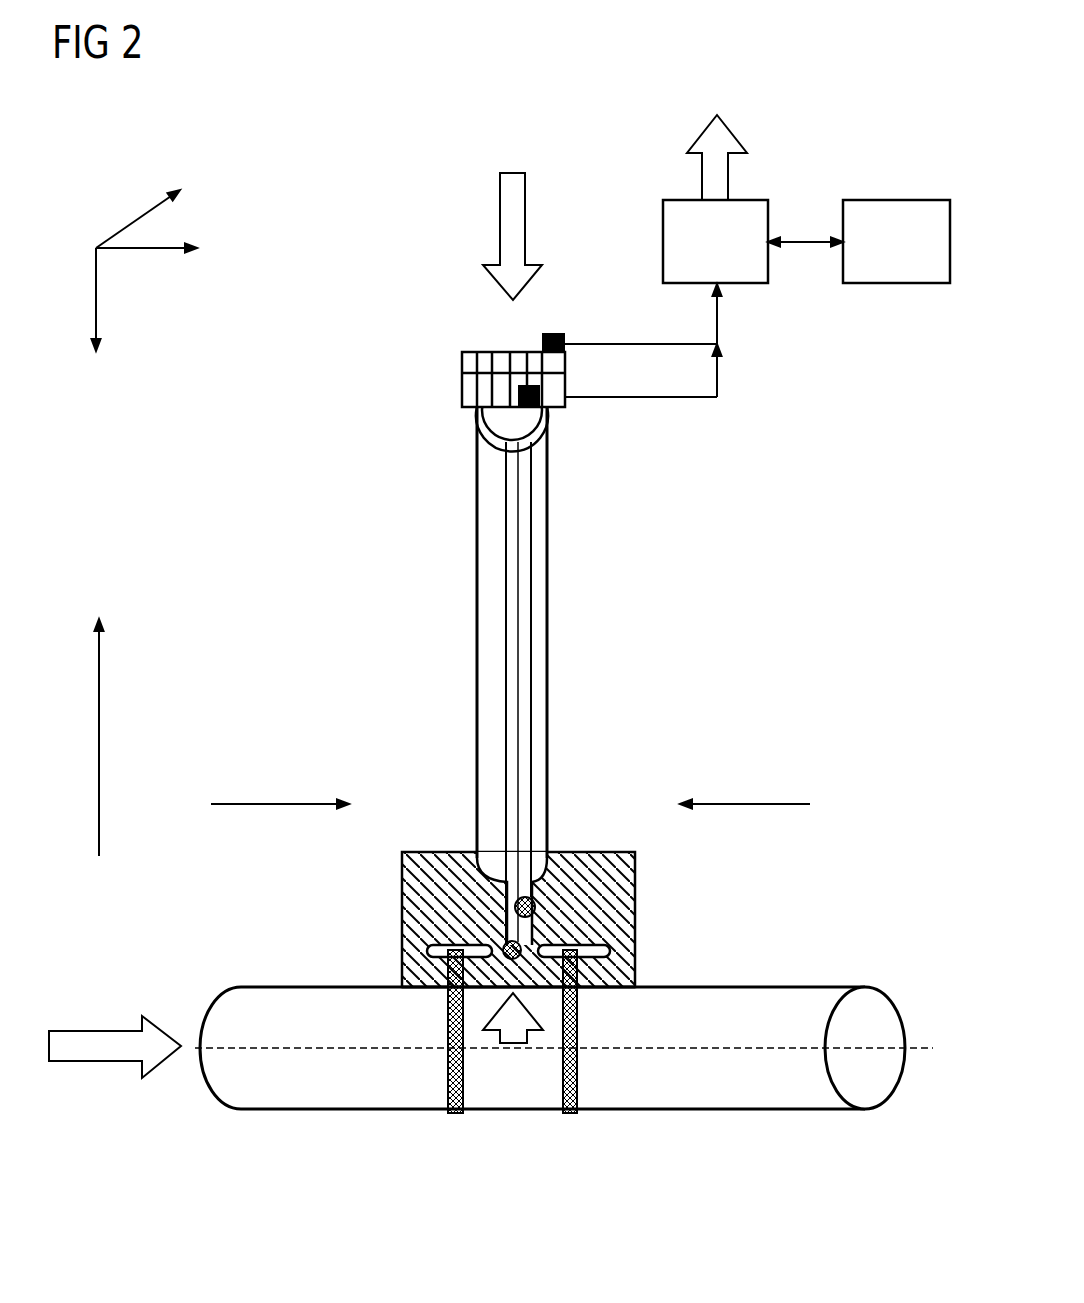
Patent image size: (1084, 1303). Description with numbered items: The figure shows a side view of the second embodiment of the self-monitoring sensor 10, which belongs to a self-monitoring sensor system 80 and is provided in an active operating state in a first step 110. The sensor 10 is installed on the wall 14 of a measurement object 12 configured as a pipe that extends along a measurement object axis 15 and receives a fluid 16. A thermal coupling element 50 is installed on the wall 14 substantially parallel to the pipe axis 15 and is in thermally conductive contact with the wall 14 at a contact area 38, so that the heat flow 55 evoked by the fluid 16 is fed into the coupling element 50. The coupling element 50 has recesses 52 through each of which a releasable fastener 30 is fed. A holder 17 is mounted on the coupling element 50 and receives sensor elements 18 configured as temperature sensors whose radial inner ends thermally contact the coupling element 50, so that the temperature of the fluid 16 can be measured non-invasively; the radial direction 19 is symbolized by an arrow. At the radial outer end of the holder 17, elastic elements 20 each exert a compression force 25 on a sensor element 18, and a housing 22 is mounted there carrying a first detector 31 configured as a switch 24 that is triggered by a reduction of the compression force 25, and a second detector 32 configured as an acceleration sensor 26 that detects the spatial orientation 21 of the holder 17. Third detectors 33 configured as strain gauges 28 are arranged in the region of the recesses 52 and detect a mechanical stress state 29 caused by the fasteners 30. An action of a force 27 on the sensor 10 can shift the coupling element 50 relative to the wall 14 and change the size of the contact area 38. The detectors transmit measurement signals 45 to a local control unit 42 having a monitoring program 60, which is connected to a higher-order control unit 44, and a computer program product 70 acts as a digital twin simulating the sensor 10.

The self-monitoring sensor 10 is at (539, 669).
The first step 110 is at (539, 669).
The measurement object 12 is at (552, 1084).
The wall 14 is at (348, 1109).
The measurement object axis 15 is at (920, 1048).
The fluid 16 is at (93, 1031).
The holder 17 is at (477, 556).
The sensor elements 18 is at (506, 628).
The radial direction 19 is at (99, 713).
The elastic elements 20 is at (517, 352).
The spatial orientation 21 is at (151, 270).
The housing 22 is at (462, 368).
The switch 24 is at (566, 672).
The first detector 31 is at (540, 405).
The compression force 25 is at (561, 236).
The acceleration sensor 26 is at (576, 310).
The second detector 32 is at (552, 333).
The force 27 is at (272, 804).
The strain gauges 28 is at (510, 957).
The mechanical stress state 29 is at (510, 957).
The third detectors 33 is at (402, 962).
The releasable fastener 30 is at (456, 1113).
The contact area 38 is at (620, 990).
The local control unit 42 is at (648, 209).
The monitoring program 60 is at (648, 209).
The higher-order control unit 44 is at (896, 200).
The measurement signals 45 is at (656, 370).
The thermal coupling element 50 is at (604, 852).
The recesses 52 is at (430, 947).
The heat flow 55 is at (515, 1043).
The computer program product 70 is at (101, 106).
The self-monitoring sensor system 80 is at (135, 121).